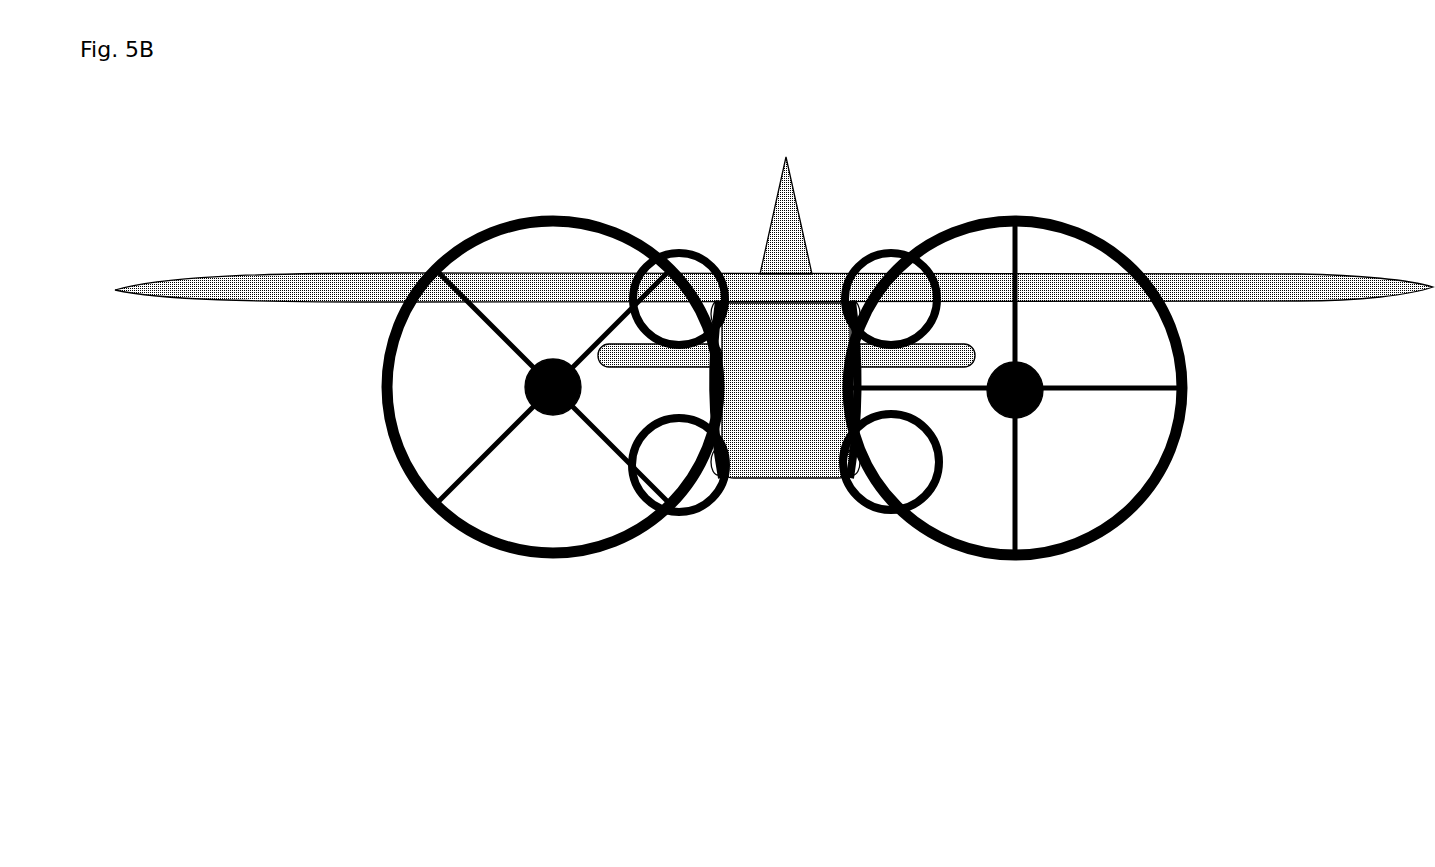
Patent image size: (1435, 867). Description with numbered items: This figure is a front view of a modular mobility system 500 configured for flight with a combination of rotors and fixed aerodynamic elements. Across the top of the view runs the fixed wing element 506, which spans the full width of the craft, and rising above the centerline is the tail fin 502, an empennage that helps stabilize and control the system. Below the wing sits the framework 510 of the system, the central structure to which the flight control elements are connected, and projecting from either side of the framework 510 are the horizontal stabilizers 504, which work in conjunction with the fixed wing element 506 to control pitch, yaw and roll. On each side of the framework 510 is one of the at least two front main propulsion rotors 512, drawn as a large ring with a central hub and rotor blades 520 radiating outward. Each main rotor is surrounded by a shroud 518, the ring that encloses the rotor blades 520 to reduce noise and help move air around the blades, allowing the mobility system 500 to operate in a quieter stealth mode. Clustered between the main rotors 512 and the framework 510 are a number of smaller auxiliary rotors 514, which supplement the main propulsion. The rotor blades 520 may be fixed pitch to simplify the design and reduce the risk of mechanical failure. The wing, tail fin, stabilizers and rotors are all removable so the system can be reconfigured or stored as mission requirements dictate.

The mobility system 500 is at (307, 225).
The tail fin 502 is at (783, 222).
The horizontal stabilizers 504 is at (948, 343).
The fixed wing element 506 is at (312, 283).
The framework 510 is at (712, 387).
The main propulsion rotors 512 is at (1015, 553).
The auxiliary rotors 514 is at (885, 517).
The shroud 518 is at (383, 367).
The rotor blades 520 is at (1017, 322).